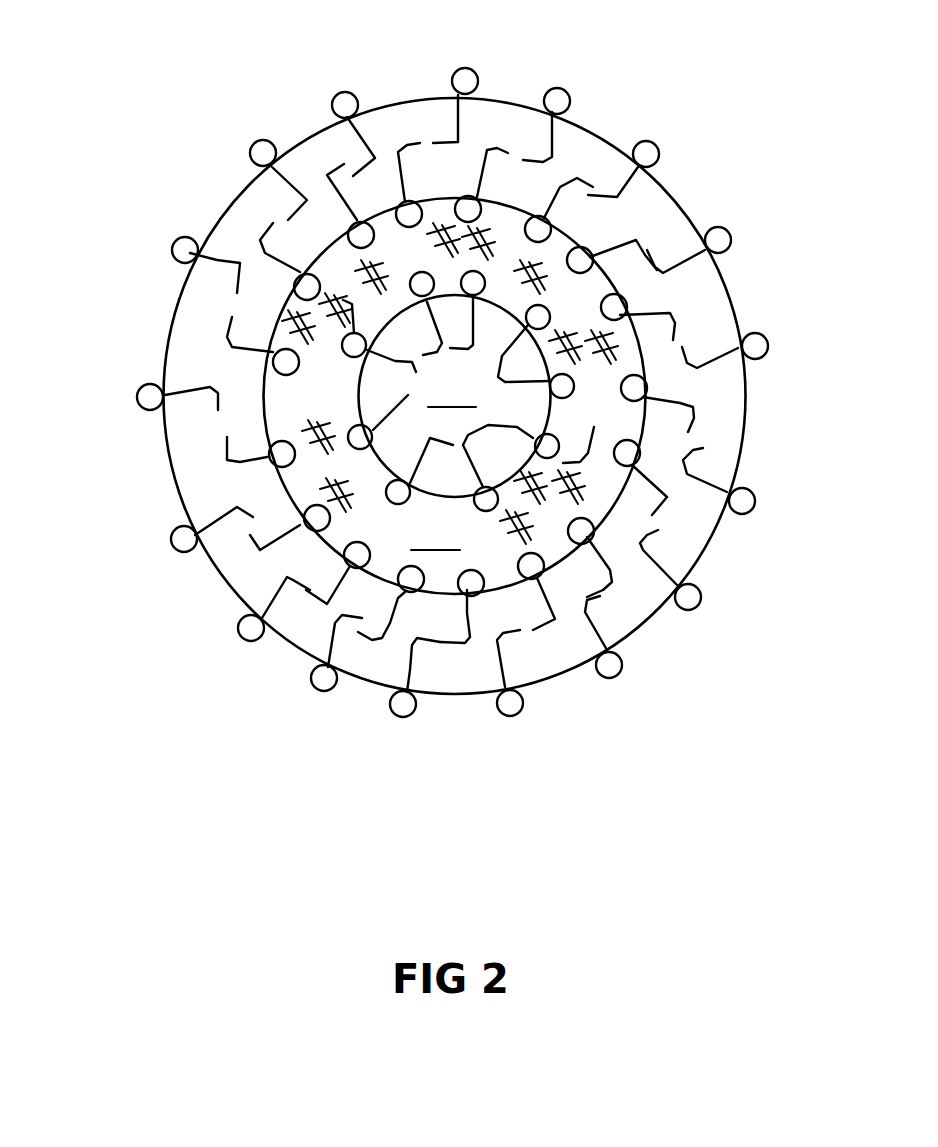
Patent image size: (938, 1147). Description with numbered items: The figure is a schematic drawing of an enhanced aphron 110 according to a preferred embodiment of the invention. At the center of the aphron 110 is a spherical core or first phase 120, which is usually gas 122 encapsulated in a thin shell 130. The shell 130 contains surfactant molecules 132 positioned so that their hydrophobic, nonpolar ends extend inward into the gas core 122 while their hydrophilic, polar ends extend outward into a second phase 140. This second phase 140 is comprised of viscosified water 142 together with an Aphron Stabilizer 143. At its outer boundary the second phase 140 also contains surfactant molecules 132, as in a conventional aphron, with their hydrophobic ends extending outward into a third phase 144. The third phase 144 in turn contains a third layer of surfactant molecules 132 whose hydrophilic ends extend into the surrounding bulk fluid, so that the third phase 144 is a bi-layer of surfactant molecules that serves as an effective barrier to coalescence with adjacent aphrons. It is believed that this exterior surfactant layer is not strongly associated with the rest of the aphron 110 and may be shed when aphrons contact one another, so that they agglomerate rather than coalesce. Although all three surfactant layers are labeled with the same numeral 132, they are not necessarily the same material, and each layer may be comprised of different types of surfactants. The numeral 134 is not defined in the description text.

The aphron 110 is at (184, 126).
The spherical core or first phase 120 is at (359, 392).
The gas 122 is at (446, 392).
The thin shell 130 is at (380, 466).
The surfactant molecules 132 is at (400, 505).
The shell polymer segment 134 is at (583, 375).
The second phase 140 is at (511, 209).
The viscosified water 142 is at (458, 396).
The Aphron Stabilizer 143 is at (538, 265).
The third phase 144 is at (630, 593).